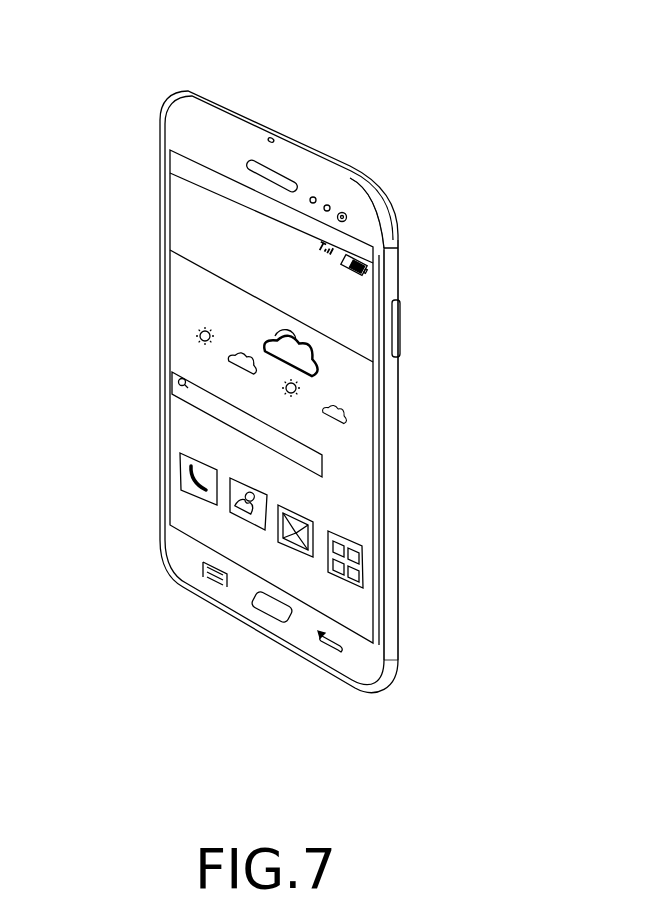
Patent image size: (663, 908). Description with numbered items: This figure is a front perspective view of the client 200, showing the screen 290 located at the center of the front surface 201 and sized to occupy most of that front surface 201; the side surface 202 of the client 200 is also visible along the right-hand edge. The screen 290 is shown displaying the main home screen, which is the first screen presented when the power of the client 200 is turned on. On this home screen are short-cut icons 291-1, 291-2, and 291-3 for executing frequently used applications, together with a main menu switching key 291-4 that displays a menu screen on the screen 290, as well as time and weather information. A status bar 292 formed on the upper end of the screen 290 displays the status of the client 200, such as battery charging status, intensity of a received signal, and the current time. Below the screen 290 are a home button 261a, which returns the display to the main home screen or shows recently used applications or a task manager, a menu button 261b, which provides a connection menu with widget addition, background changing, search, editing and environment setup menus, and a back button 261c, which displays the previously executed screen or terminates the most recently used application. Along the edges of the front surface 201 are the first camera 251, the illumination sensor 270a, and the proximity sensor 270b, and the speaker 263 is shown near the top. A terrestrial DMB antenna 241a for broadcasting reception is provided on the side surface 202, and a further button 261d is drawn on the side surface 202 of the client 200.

The client 200 is at (132, 66).
The front surface 201 is at (177, 132).
The side surface 202 is at (393, 433).
The terrestrial DMB antenna 241a is at (381, 210).
The first camera 251 is at (343, 213).
The speaker 263 is at (247, 162).
The illumination sensor 270a is at (313, 197).
The proximity sensor 270b is at (327, 205).
The screen 290 is at (180, 350).
The short-cut icon 291-1 is at (195, 458).
The short-cut icon 291-2 is at (243, 480).
The short-cut icon 291-3 is at (303, 521).
The main menu switching key 291-4 is at (347, 540).
The status bar 292 is at (178, 169).
The home button 261a is at (277, 608).
The menu button 261b is at (203, 565).
The back button 261c is at (328, 650).
The side key 261d is at (400, 330).